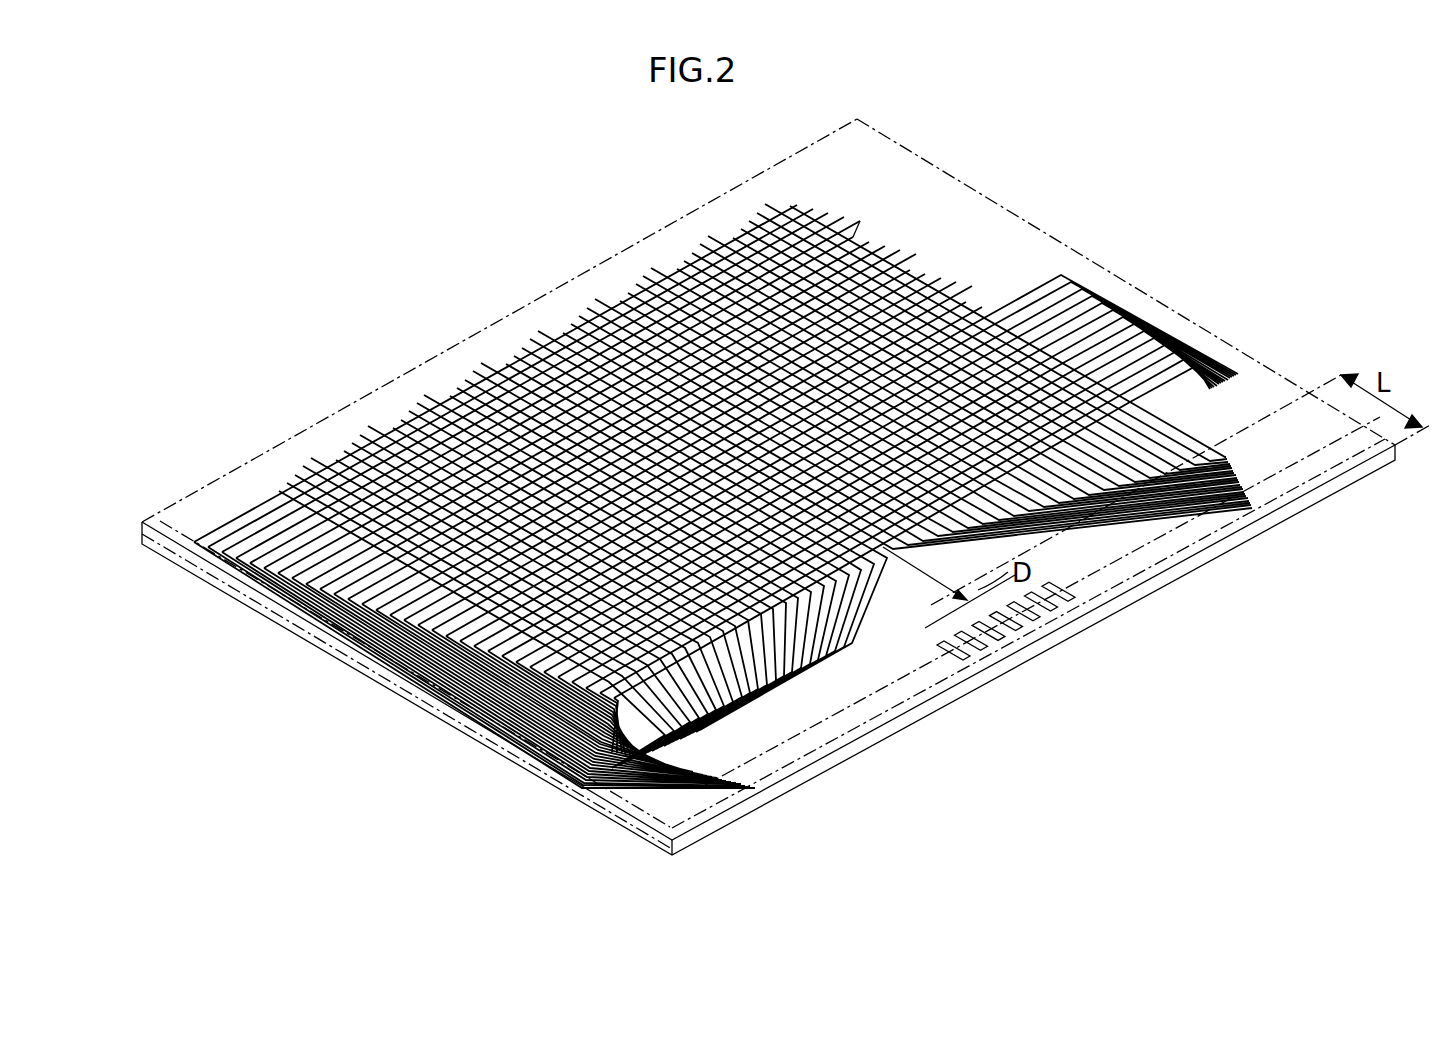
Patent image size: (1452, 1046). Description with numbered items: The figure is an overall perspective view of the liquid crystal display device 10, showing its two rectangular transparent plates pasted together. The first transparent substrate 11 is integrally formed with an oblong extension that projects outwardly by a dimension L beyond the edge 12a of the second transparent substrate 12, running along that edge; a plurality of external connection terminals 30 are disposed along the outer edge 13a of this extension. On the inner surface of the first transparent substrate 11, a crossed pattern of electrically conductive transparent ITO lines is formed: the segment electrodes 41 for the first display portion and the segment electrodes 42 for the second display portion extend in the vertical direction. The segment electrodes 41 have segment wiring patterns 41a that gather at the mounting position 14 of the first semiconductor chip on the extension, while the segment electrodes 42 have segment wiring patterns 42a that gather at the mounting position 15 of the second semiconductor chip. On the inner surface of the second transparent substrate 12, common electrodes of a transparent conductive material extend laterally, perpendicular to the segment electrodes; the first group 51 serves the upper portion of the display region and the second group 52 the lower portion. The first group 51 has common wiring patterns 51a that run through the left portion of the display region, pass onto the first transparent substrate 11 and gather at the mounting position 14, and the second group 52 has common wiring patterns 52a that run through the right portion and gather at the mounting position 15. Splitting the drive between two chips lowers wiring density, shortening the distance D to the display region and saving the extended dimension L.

The liquid crystal display device 10 is at (1180, 304).
The first transparent substrate 11 is at (297, 632).
The second transparent substrate 12 is at (285, 462).
The edge of the second transparent substrate 12a is at (1285, 383).
The outer edge of the extension 13a is at (1105, 610).
The mounting position of the first semiconductor chip 14 is at (790, 742).
The mounting position of the second semiconductor chip 15 is at (1222, 500).
The external connection terminals 30 is at (1027, 655).
The segment electrodes 41 is at (458, 392).
The segment wiring patterns 41a is at (900, 655).
The segment electrodes 42 is at (722, 246).
The segment wiring patterns 42a is at (1142, 524).
The common electrodes of the first group 51 is at (957, 298).
The common wiring patterns 51a is at (670, 784).
The common electrodes of the second group 52 is at (482, 726).
The common wiring patterns 52a is at (1304, 478).